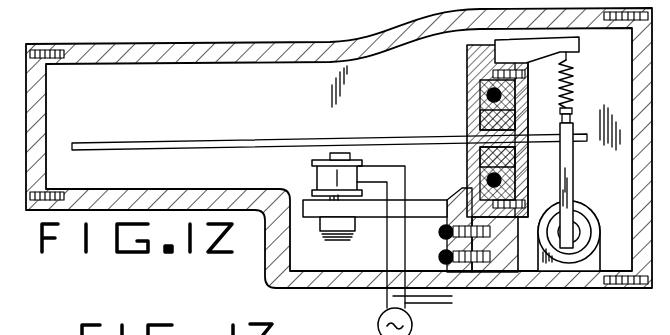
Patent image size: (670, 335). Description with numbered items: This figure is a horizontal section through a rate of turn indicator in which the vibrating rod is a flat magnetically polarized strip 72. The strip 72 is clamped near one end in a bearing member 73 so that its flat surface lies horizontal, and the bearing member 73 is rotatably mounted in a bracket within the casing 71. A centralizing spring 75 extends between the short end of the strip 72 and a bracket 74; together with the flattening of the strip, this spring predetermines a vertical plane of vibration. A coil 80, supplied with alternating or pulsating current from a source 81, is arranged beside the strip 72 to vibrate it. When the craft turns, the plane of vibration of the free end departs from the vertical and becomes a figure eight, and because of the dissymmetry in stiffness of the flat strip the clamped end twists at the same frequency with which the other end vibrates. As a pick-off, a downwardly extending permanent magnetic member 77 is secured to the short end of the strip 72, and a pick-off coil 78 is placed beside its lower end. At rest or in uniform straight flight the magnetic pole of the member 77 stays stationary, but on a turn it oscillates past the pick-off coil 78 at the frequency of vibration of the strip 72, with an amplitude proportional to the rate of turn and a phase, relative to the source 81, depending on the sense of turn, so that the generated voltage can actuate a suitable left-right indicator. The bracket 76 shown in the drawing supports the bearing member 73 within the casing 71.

The casing 71 is at (211, 43).
The magnetically polarized strip 72 is at (227, 139).
The bearing member 73 is at (467, 110).
The bracket 74 is at (580, 44).
The centralizing spring 75 is at (574, 89).
The bearing housing 76 is at (467, 72).
The permanent magnetic member 77 is at (574, 170).
The pick-off coil 78 is at (593, 210).
The coil 80 is at (317, 176).
The source 81 is at (412, 332).